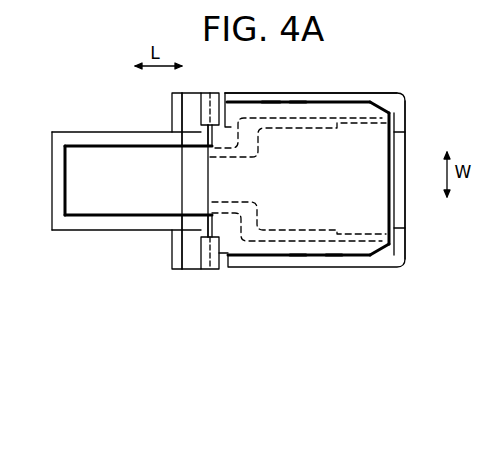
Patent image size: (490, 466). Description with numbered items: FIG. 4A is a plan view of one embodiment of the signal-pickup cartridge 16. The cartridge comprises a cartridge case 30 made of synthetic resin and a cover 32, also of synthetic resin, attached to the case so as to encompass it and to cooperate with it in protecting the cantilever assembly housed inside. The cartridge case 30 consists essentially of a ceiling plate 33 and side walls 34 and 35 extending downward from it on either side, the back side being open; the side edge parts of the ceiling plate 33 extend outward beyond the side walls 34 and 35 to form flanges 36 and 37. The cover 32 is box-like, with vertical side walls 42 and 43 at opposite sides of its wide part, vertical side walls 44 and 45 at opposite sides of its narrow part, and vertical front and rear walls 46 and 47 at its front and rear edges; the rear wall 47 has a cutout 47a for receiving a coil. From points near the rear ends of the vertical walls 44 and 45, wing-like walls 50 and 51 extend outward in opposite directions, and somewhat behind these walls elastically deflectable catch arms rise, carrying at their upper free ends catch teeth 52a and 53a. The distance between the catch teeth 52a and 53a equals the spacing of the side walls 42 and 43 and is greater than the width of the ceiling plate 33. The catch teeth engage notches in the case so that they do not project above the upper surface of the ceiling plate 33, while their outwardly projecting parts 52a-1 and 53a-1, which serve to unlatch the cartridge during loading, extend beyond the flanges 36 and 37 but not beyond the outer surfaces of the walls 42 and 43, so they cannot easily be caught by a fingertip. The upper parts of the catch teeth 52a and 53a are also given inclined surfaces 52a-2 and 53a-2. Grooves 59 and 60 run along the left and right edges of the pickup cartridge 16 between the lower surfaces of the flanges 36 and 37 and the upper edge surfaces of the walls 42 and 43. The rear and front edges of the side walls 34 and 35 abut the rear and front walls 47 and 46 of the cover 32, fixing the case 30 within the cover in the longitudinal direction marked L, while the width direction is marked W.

The signal-pickup cartridge 16 is at (94, 79).
The cartridge case 30 is at (396, 153).
The cover 32 is at (313, 87).
The ceiling plate 33 is at (395, 195).
The side wall 34 is at (332, 261).
The side wall 35 is at (298, 103).
The flange 36 is at (298, 259).
The flange 37 is at (270, 103).
The vertical side wall 42 is at (278, 266).
The vertical side wall 43 is at (380, 93).
The vertical side wall 44 is at (101, 226).
The vertical side wall 45 is at (92, 131).
The front wall 46 is at (55, 191).
The rear wall 47 is at (403, 239).
The cutout 47a is at (401, 226).
The wing-like wall 50 is at (173, 252).
The wing-like wall 51 is at (170, 110).
The catch tooth 52a is at (201, 255).
The outwardly projecting part 52a-1 is at (216, 270).
The inclined surface 52a-2 is at (218, 246).
The catch tooth 53a is at (199, 97).
The outwardly projecting part 53a-1 is at (210, 105).
The inclined surface 53a-2 is at (220, 120).
The groove 59 is at (361, 268).
The groove 60 is at (345, 103).